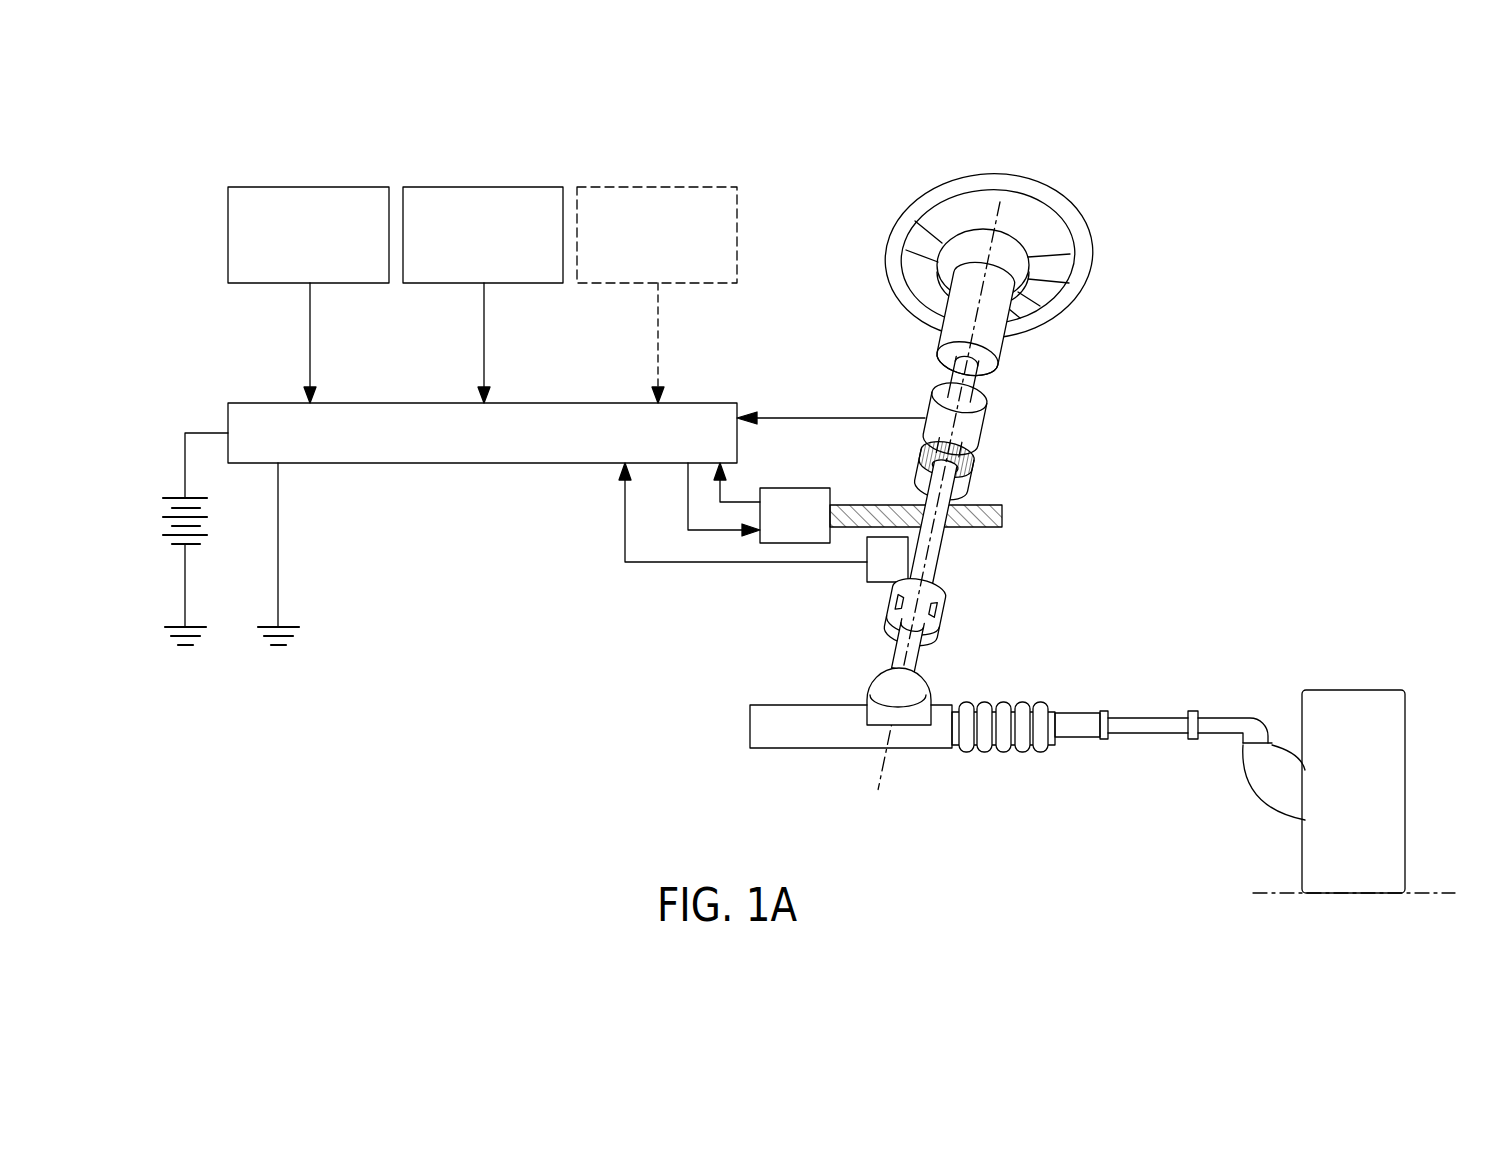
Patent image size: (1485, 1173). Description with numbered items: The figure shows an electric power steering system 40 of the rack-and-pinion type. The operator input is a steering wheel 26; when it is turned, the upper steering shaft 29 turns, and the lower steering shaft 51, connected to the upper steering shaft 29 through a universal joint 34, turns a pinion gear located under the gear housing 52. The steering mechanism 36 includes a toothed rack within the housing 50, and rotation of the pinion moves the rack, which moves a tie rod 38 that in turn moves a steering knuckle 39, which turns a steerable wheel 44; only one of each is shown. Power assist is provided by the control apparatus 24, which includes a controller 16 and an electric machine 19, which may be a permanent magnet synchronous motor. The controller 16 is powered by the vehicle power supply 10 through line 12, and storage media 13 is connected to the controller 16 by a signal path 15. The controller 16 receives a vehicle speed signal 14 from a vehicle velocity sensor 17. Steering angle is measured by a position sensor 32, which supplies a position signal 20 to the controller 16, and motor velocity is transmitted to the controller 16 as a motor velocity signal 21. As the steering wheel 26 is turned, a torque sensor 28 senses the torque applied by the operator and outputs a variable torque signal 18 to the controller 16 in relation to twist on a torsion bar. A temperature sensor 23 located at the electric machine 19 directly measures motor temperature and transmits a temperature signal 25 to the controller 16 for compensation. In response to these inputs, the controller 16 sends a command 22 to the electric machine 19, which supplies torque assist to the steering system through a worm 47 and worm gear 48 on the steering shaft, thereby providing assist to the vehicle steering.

The vehicle power supply 10 is at (170, 526).
The line 12 is at (200, 433).
The storage media 13 is at (308, 187).
The vehicle speed signal 14 is at (484, 318).
The storage media signal 15 is at (310, 318).
The controller 16 is at (450, 463).
The vehicle velocity sensor 17 is at (483, 187).
The torque signal 18 is at (842, 415).
The electric machine 19 is at (805, 488).
The position signal 20 is at (752, 562).
The motor velocity signal 21 is at (747, 498).
The command 22 is at (703, 530).
The temperature sensor 23 is at (658, 187).
The control apparatus 24 is at (1188, 398).
The temperature signal 25 is at (658, 318).
The steering wheel 26 is at (1044, 207).
The torque sensor 28 is at (980, 420).
The upper steering shaft 29 is at (948, 387).
The position sensor 32 is at (867, 573).
The universal joint 34 is at (948, 611).
The steering mechanism 36 is at (1032, 695).
The tie rod 38 is at (1143, 735).
The steering knuckle 39 is at (1270, 780).
The electric power steering system 40 is at (1273, 494).
The steerable wheel 44 is at (1340, 705).
The worm 47 is at (990, 516).
The worm gear 48 is at (957, 478).
The housing 50 is at (790, 735).
The lower steering shaft 51 is at (913, 662).
The gear housing 52 is at (875, 685).